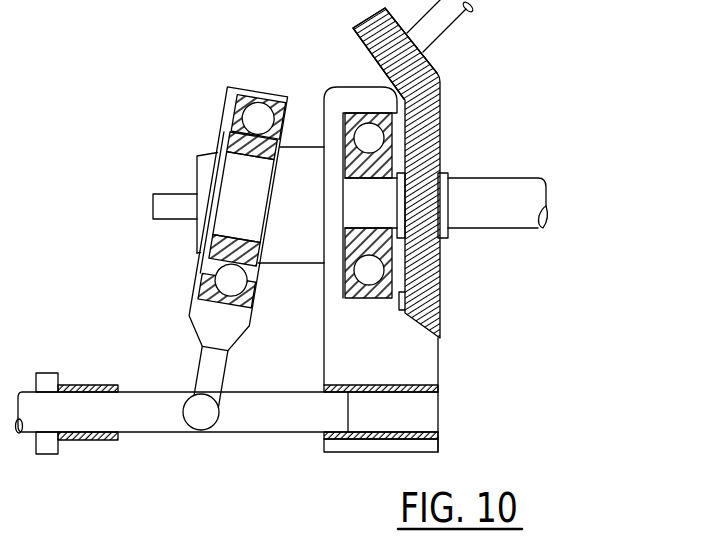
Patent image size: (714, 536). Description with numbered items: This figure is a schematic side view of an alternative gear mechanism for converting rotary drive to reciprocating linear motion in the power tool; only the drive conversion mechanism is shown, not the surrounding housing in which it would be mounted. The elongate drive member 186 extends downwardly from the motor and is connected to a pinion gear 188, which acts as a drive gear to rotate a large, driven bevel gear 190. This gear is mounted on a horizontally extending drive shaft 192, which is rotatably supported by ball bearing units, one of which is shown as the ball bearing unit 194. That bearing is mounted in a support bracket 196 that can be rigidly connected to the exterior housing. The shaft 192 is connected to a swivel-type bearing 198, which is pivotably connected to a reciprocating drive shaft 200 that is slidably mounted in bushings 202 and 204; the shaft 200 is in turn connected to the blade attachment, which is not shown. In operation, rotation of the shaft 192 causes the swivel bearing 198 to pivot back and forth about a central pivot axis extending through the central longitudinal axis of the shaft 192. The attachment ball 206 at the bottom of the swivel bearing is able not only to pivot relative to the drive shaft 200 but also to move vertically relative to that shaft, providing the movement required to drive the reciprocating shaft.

The elongate drive member 186 is at (471, 12).
The pinion gear 188 is at (438, 72).
The driven bevel gear 190 is at (439, 143).
The drive shaft 192 is at (507, 214).
The ball bearing unit 194 is at (380, 276).
The support bracket 196 is at (426, 364).
The swivel-type bearing 198 is at (216, 289).
The reciprocating drive shaft 200 is at (153, 392).
The bushing 202 is at (118, 442).
The bushing 204 is at (327, 440).
The attachment ball 206 is at (203, 432).